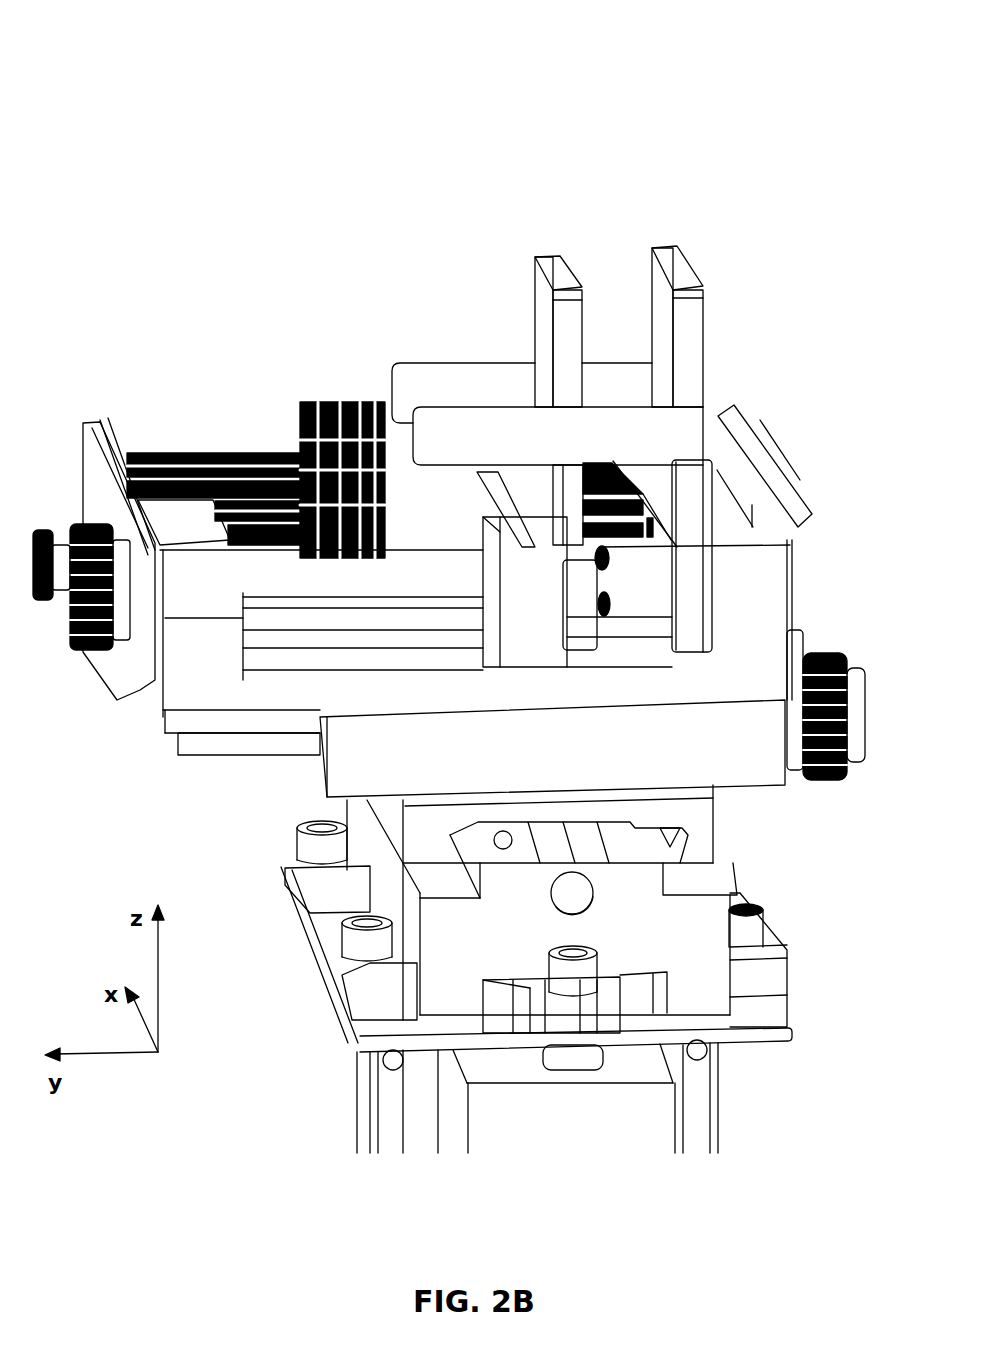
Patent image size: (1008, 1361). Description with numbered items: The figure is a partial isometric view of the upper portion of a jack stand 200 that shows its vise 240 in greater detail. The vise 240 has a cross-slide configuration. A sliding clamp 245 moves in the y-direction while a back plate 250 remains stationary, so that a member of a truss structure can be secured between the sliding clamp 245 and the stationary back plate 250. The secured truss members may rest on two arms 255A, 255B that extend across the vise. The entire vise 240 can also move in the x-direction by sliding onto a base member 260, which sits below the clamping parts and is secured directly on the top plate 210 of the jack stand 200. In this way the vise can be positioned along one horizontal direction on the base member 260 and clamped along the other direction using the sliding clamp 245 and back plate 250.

The jack stand 200 is at (246, 72).
The vise 240 is at (673, 229).
The sliding clamp 245 is at (535, 320).
The back plate 250 is at (703, 314).
The arm 255A is at (558, 436).
The arm 255B is at (522, 393).
The base member 260 is at (534, 914).
The top plate 210 is at (768, 1017).